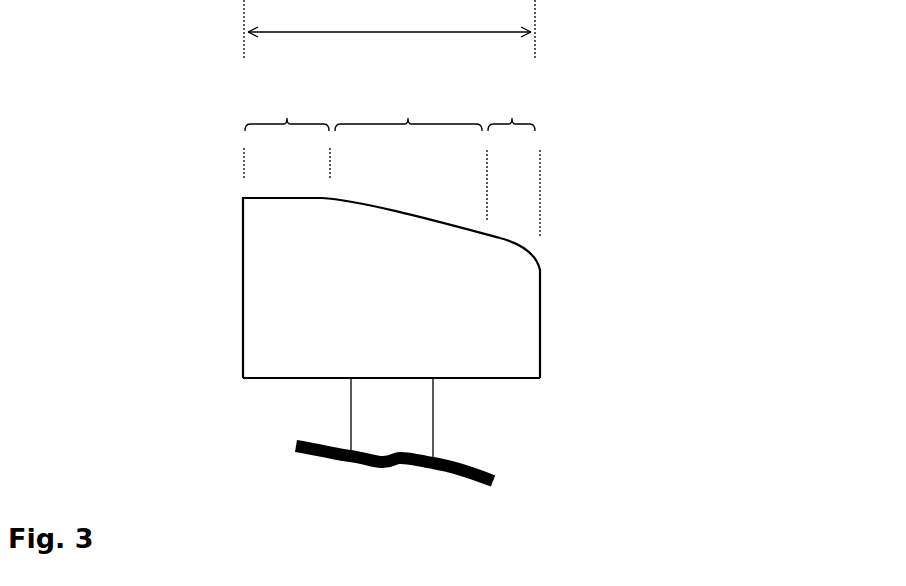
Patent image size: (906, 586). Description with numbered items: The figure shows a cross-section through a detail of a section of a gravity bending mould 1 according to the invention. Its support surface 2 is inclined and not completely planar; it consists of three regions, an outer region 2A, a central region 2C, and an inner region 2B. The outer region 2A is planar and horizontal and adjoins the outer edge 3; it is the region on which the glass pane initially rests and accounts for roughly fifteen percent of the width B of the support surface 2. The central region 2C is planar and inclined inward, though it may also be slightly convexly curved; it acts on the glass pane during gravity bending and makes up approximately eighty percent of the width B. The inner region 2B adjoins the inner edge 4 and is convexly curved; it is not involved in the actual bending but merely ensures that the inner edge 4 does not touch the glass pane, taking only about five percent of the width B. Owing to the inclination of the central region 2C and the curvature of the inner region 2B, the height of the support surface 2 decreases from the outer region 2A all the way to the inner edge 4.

The gravity bending mould 1 is at (410, 401).
The support surface 2 is at (508, 248).
The outer edge 3 is at (243, 198).
The inner edge 4 is at (540, 270).
The outer region 2A is at (287, 128).
The central region 2C is at (411, 150).
The inner region 2B is at (514, 157).
The width of the support surface B is at (389, 30).